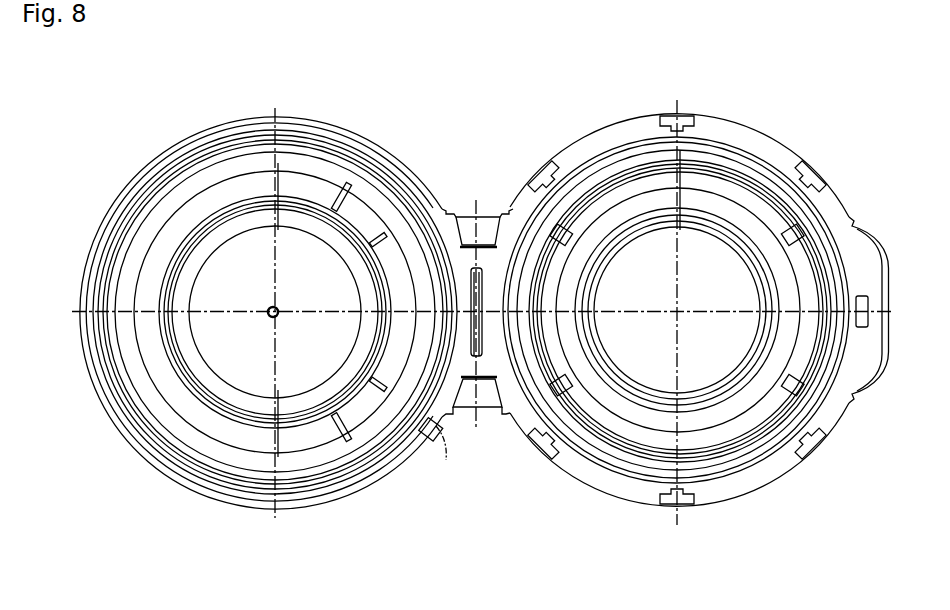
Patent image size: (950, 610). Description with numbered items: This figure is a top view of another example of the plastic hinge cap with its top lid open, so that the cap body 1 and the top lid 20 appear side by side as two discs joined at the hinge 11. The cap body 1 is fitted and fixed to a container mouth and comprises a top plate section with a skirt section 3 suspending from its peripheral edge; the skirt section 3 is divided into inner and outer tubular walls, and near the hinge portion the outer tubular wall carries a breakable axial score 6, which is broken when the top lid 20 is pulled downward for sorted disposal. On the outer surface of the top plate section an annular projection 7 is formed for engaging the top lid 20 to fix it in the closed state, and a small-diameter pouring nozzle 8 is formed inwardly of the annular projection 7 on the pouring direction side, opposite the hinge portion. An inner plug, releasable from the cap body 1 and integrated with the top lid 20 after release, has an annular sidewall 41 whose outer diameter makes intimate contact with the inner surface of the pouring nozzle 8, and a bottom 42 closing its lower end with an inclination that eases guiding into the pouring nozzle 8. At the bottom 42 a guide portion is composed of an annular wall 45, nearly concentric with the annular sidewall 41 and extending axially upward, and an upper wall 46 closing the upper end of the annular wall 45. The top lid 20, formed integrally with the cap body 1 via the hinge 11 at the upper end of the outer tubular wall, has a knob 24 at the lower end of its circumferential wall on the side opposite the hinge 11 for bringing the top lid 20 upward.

The cap body 1 is at (95, 432).
The skirt section 3 is at (152, 453).
The score 6 is at (437, 442).
The annular projection 7 is at (138, 197).
The pouring nozzle 8 is at (148, 245).
The hinge 11 is at (488, 184).
The top lid 20 is at (784, 135).
The knob 24 is at (883, 243).
The annular sidewall 41 is at (197, 220).
The bottom 42 is at (342, 248).
The annular wall 45 is at (252, 227).
The upper wall 46 is at (293, 252).